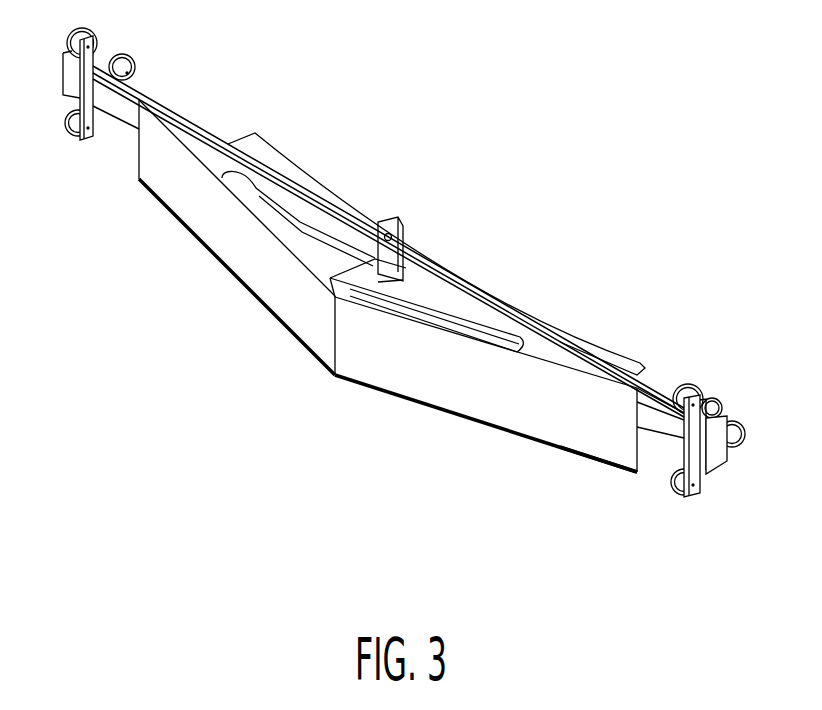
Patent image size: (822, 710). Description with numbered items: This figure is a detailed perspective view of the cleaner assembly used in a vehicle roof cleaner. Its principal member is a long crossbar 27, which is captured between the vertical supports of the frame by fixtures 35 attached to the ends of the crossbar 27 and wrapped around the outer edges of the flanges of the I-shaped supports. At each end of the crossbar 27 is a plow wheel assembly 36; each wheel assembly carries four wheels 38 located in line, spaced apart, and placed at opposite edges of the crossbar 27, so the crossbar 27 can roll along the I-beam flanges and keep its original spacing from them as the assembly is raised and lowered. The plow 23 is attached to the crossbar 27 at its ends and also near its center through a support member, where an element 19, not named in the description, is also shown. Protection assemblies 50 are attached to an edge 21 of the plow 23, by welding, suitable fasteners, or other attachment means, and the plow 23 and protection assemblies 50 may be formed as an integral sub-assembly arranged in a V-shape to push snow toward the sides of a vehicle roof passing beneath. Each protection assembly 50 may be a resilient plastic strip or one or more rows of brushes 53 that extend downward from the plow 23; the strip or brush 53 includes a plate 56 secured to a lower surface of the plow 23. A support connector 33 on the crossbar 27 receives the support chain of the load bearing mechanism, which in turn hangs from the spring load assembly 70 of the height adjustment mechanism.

The spring load assembly 70 is at (359, 113).
The wheels 38 is at (66, 118).
The plow wheel assemblies 36 is at (103, 112).
The fixtures 35 is at (726, 410).
The crossbar 27 is at (200, 124).
The plate 56 is at (280, 148).
The edge 21 is at (430, 406).
The protection assemblies 50 is at (362, 387).
The brushes 53 is at (605, 462).
The plow 23 is at (420, 335).
The support block 19 is at (402, 258).
The support connector 33 is at (412, 220).